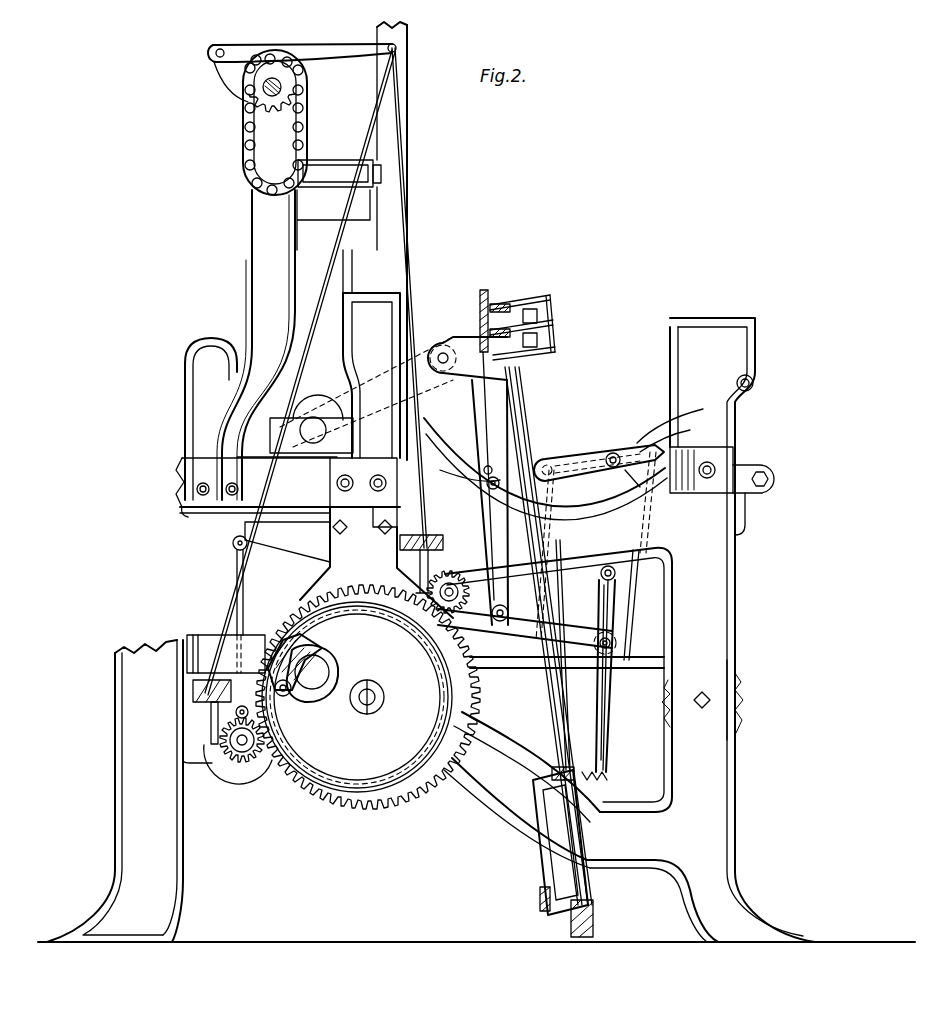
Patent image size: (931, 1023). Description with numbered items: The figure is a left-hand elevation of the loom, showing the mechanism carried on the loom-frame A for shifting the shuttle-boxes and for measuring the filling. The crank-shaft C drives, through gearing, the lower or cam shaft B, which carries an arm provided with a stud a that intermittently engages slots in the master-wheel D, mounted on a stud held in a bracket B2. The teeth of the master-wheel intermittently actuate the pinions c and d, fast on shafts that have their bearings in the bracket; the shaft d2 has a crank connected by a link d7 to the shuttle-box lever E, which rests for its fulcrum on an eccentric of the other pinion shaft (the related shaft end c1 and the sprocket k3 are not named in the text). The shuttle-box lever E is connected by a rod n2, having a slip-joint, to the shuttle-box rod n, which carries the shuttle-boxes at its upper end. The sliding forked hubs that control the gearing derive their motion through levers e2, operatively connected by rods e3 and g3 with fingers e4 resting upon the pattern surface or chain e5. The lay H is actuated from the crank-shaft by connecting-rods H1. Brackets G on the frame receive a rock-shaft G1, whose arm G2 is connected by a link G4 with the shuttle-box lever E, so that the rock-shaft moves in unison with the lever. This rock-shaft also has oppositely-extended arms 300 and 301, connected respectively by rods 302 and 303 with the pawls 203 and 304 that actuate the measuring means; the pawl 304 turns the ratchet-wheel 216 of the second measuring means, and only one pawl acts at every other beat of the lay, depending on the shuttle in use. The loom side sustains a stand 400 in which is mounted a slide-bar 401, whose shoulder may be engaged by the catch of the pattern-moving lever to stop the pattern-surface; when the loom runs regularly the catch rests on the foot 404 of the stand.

The loom-frame A is at (727, 583).
The ratchet-wheel 216 is at (742, 703).
The bracket B2 is at (330, 517).
The shuttle-box lever E is at (304, 552).
The crank-shaft C is at (314, 425).
The rod e3 is at (404, 217).
The rod g3 is at (342, 208).
The finger e4 is at (388, 45).
The pattern surface or chain e5 is at (247, 123).
The sprocket wheel k3 is at (284, 90).
The connecting-rods H1 is at (440, 352).
The lay H is at (483, 428).
The shuttle-box rod n is at (512, 437).
The rod n2 is at (590, 800).
The pinion c is at (456, 590).
The pinion shaft c1 is at (452, 583).
The lever e2 is at (430, 553).
The link d7 is at (242, 570).
The pinion d is at (248, 758).
The shaft d2 is at (237, 752).
The master-wheel D is at (368, 800).
The cam shaft B is at (308, 680).
The stud a is at (283, 643).
The arm G2 is at (538, 463).
The link G4 is at (470, 471).
The arm 300 is at (582, 450).
The rod 302 is at (591, 479).
The arm 301 is at (637, 463).
The rock-shaft G1 is at (614, 452).
The slide-bar 401 is at (675, 416).
The foot 404 is at (672, 433).
The stand 400 is at (647, 503).
The brackets G is at (660, 480).
The rod 303 is at (640, 603).
The pawl 304 is at (647, 667).
The pawl 203 is at (662, 670).